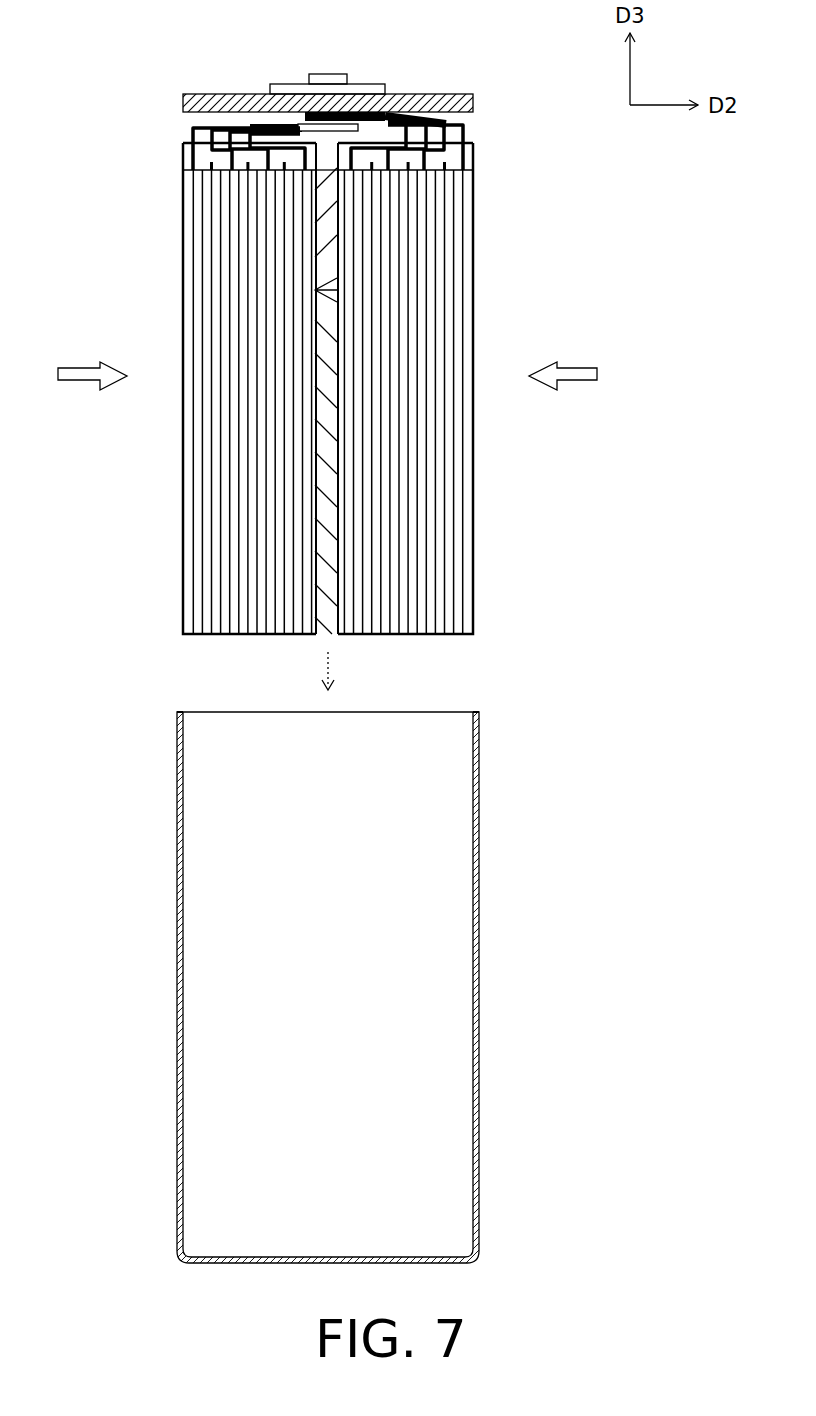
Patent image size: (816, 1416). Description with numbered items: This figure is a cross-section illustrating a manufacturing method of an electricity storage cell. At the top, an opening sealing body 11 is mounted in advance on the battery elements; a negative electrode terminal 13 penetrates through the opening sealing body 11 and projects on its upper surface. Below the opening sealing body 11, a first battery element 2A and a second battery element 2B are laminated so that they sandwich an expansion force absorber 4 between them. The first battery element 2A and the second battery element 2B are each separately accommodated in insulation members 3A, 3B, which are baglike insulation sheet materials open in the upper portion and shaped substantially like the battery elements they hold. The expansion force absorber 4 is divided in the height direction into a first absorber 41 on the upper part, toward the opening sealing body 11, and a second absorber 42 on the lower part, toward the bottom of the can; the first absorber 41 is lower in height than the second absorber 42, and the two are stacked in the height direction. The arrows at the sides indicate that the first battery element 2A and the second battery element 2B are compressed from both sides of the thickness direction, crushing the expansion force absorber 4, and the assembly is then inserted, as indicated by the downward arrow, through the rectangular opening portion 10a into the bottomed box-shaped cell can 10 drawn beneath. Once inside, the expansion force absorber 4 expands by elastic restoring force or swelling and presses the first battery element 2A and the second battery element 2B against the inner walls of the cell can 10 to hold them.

The negative electrode terminal 13 is at (330, 73).
The opening sealing body 11 is at (414, 94).
The insulation member 3B is at (183, 155).
The insulation member 3A is at (473, 155).
The second battery element 2B is at (165, 490).
The first battery element 2A is at (490, 490).
The expansion force absorber 4 is at (553, 253).
The first absorber 41 is at (338, 235).
The second absorber 42 is at (338, 338).
The cell can 10 is at (479, 938).
The opening portion 10a is at (473, 712).